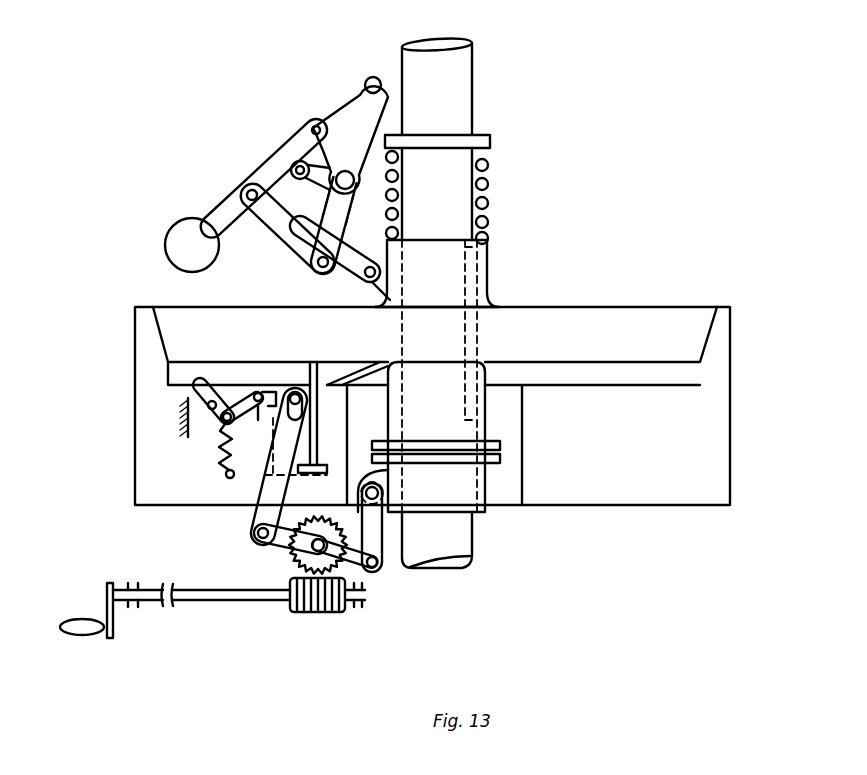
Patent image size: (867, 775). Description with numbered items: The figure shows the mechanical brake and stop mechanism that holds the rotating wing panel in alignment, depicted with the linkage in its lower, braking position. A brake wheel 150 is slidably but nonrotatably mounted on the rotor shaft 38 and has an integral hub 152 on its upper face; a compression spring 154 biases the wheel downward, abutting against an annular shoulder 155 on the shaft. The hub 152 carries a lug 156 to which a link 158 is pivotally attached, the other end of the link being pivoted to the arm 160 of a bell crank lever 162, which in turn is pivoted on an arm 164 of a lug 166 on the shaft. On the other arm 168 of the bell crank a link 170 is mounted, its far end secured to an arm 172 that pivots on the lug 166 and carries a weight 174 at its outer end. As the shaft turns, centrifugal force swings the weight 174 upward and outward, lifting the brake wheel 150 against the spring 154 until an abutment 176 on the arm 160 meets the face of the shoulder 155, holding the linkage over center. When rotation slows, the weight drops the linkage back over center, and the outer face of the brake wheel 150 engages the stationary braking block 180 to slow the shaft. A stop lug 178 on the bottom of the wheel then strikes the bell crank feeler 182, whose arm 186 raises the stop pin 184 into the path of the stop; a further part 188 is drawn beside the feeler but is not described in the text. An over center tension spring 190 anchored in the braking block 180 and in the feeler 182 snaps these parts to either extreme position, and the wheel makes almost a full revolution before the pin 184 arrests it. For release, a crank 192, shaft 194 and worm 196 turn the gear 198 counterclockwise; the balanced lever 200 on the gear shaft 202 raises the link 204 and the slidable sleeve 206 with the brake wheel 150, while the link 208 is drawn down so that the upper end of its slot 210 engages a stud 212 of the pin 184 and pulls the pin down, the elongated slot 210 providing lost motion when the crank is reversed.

The rotor shaft 38 is at (475, 60).
The brake wheel 150 is at (570, 310).
The hub 152 is at (490, 260).
The compression spring 154 is at (488, 164).
The annular shoulder 155 is at (490, 140).
The lug 156 is at (383, 283).
The link 158 is at (353, 260).
The arm 160 is at (308, 147).
The bell crank lever 162 is at (300, 183).
The arm 164 is at (302, 157).
The lug 166 is at (378, 65).
The arm 168 is at (318, 232).
The link 170 is at (283, 230).
The arm 172 is at (330, 112).
The weight 174 is at (183, 217).
The abutment 176 is at (313, 130).
The stop lug 178 is at (325, 370).
The braking block 180 is at (138, 343).
The bell crank feeler 182 is at (190, 392).
The stop pin 184 is at (282, 385).
The arm 186 is at (240, 392).
The catch 188 is at (265, 410).
The over center tension spring 190 is at (213, 457).
The crank 192 is at (88, 636).
The shaft 194 is at (213, 600).
The worm 196 is at (315, 613).
The gear 198 is at (296, 560).
The balanced lever 200 is at (357, 572).
The shaft 202 is at (283, 555).
The link 204 is at (383, 540).
The slidable sleeve 206 is at (480, 476).
The link 208 is at (257, 515).
The slot 210 is at (310, 417).
The stud 212 is at (298, 390).